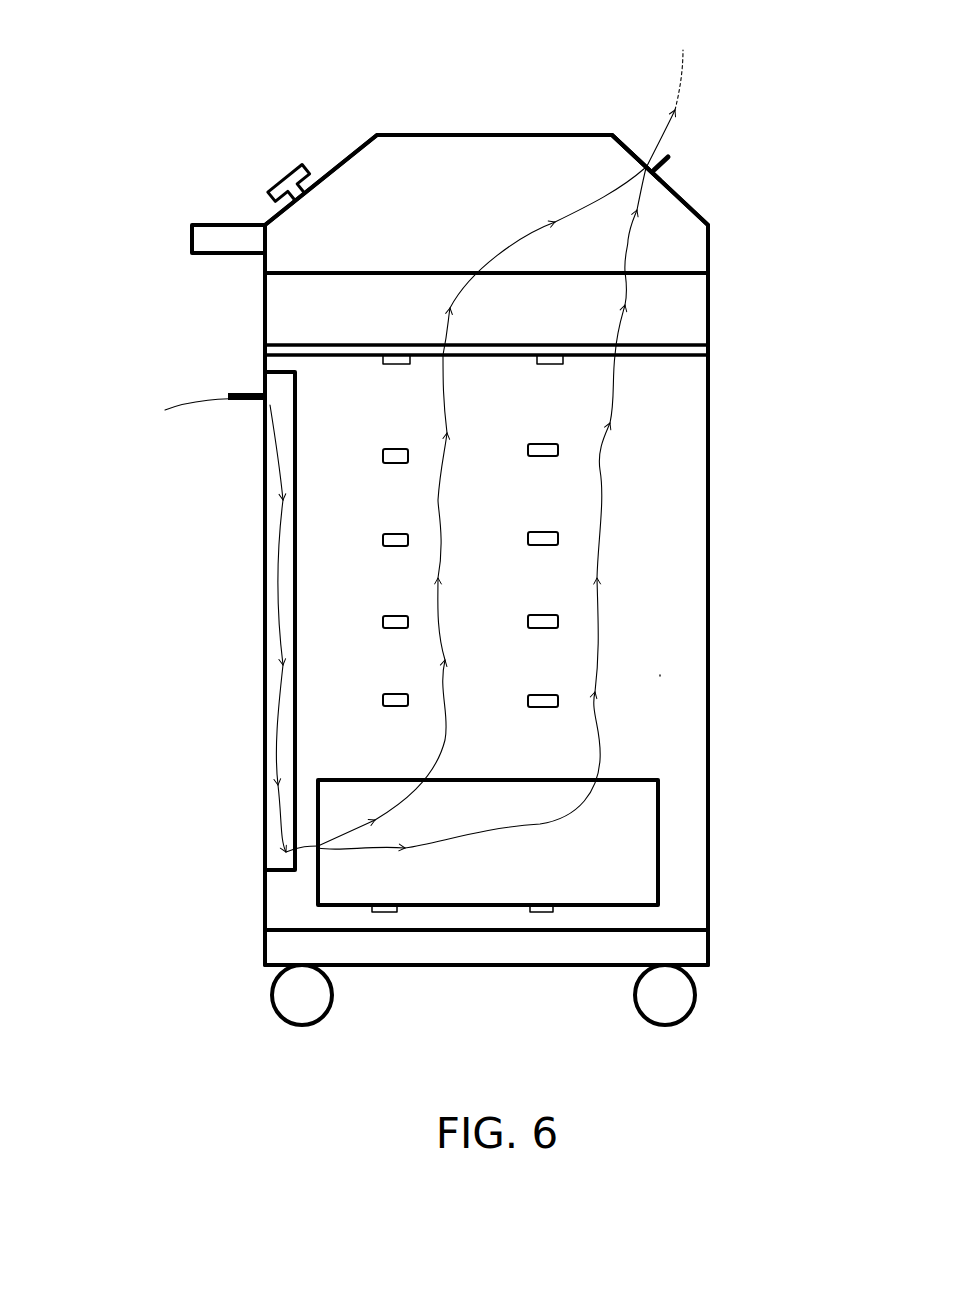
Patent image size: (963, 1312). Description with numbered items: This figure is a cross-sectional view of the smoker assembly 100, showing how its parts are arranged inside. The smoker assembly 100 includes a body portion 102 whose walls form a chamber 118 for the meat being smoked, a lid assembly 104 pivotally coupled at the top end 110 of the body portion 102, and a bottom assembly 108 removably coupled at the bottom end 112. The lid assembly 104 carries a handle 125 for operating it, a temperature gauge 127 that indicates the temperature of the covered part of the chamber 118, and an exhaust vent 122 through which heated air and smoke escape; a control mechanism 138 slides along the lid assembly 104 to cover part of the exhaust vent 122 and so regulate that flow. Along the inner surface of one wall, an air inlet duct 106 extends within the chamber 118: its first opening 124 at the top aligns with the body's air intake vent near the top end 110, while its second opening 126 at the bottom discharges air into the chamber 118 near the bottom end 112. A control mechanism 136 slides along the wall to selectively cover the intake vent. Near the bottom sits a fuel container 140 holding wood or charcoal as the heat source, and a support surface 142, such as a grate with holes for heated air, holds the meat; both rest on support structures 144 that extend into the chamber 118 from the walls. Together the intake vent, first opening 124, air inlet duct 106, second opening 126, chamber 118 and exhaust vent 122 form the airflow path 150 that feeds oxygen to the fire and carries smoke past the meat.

The smoker assembly 100 is at (95, 90).
The body portion 102 is at (748, 575).
The lid assembly 104 is at (358, 125).
The air inlet duct 106 is at (268, 880).
The bottom assembly 108 is at (715, 955).
The top end 110 is at (728, 398).
The bottom end 112 is at (713, 890).
The chamber 118 is at (660, 675).
The exhaust vent 122 is at (643, 166).
The first opening 124 is at (255, 405).
The handle 125 is at (192, 238).
The second opening 126 is at (285, 855).
The temperature gauge 127 is at (280, 183).
The control mechanism 136 is at (240, 392).
The control mechanism 138 is at (668, 163).
The fuel container 140 is at (660, 822).
The support surface 142 is at (708, 345).
The support structures 144 is at (408, 540).
The airflow path 150 is at (628, 240).